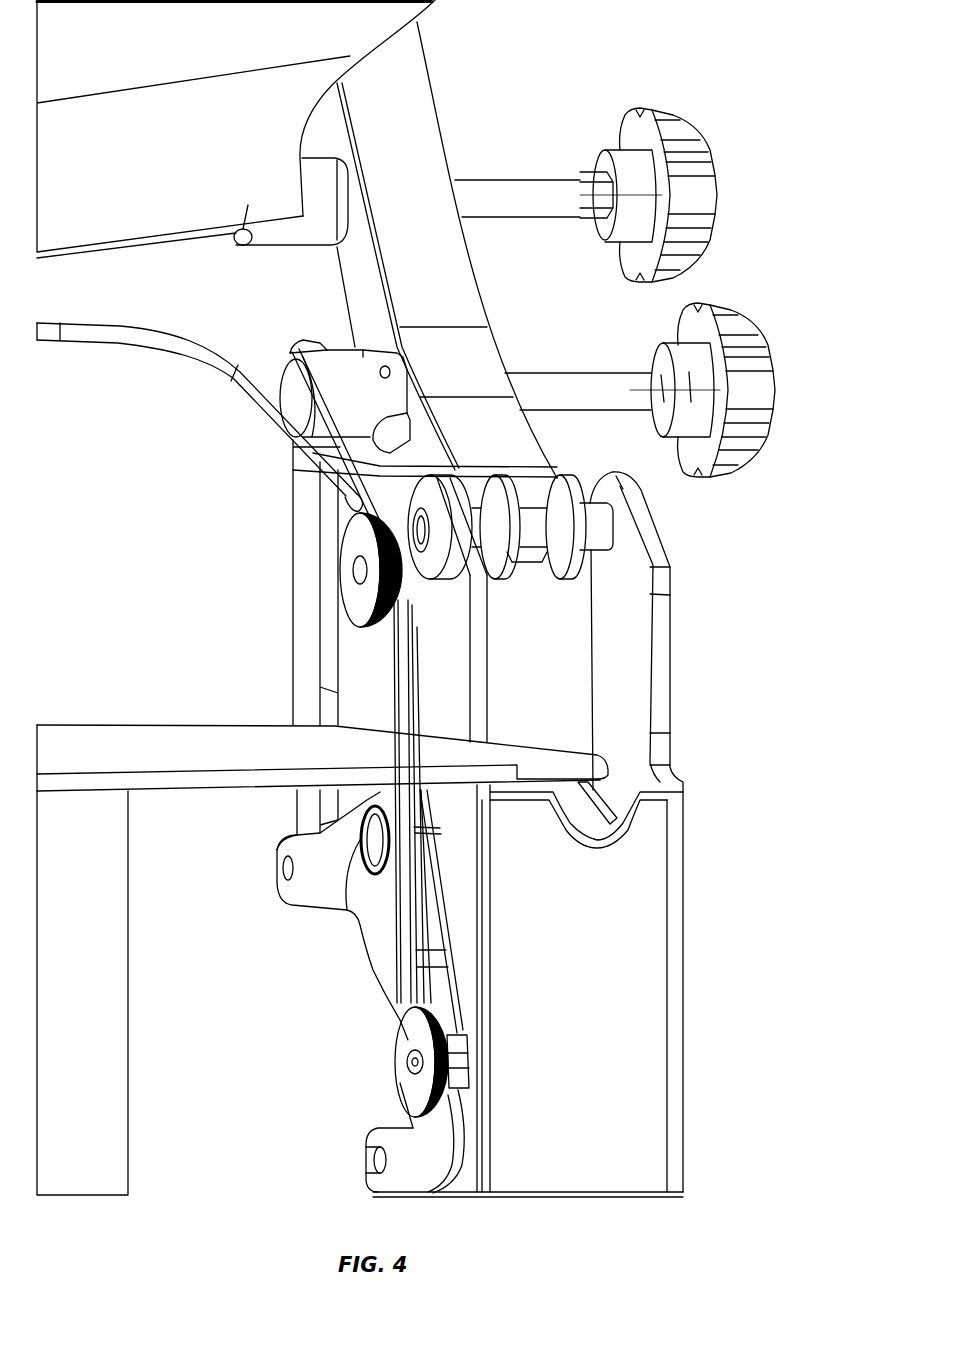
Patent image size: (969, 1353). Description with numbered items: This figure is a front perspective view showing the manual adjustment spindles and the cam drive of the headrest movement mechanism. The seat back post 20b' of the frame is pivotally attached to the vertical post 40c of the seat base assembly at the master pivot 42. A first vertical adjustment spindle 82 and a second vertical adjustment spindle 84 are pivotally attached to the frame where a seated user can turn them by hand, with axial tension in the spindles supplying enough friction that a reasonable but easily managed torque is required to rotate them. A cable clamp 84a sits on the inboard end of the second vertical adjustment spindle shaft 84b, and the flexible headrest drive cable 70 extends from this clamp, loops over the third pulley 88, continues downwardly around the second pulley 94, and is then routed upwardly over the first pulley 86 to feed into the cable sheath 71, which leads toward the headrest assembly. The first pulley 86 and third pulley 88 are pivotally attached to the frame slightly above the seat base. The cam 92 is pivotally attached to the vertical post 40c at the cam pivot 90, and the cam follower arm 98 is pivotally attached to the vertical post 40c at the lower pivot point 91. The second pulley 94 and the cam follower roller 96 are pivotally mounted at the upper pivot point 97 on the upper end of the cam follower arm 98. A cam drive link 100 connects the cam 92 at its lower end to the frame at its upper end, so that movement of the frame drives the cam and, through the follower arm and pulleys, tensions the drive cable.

The seat back post 20b' is at (396, 239).
The first vertical adjustment spindle 82 is at (707, 137).
The second vertical adjustment spindle 84 is at (743, 302).
The cable clamp 84a is at (292, 367).
The second vertical adjustment spindle shaft 84b is at (537, 374).
The cable sheath 71 is at (132, 340).
The vertical post 40c is at (645, 497).
The master pivot 42 is at (600, 523).
The cam drive link 100 is at (293, 543).
The first pulley 86 is at (356, 563).
The flexible headrest drive cable 70 is at (388, 677).
The third pulley 88 is at (413, 550).
The cam 92 is at (445, 910).
The cam pivot 90 is at (347, 910).
The upper pivot point 97 is at (410, 1070).
The second pulley 94 is at (435, 1067).
The lower pivot point 91 is at (363, 1163).
The cam follower arm 98 is at (465, 1137).
The cam follower roller 96 is at (460, 1077).